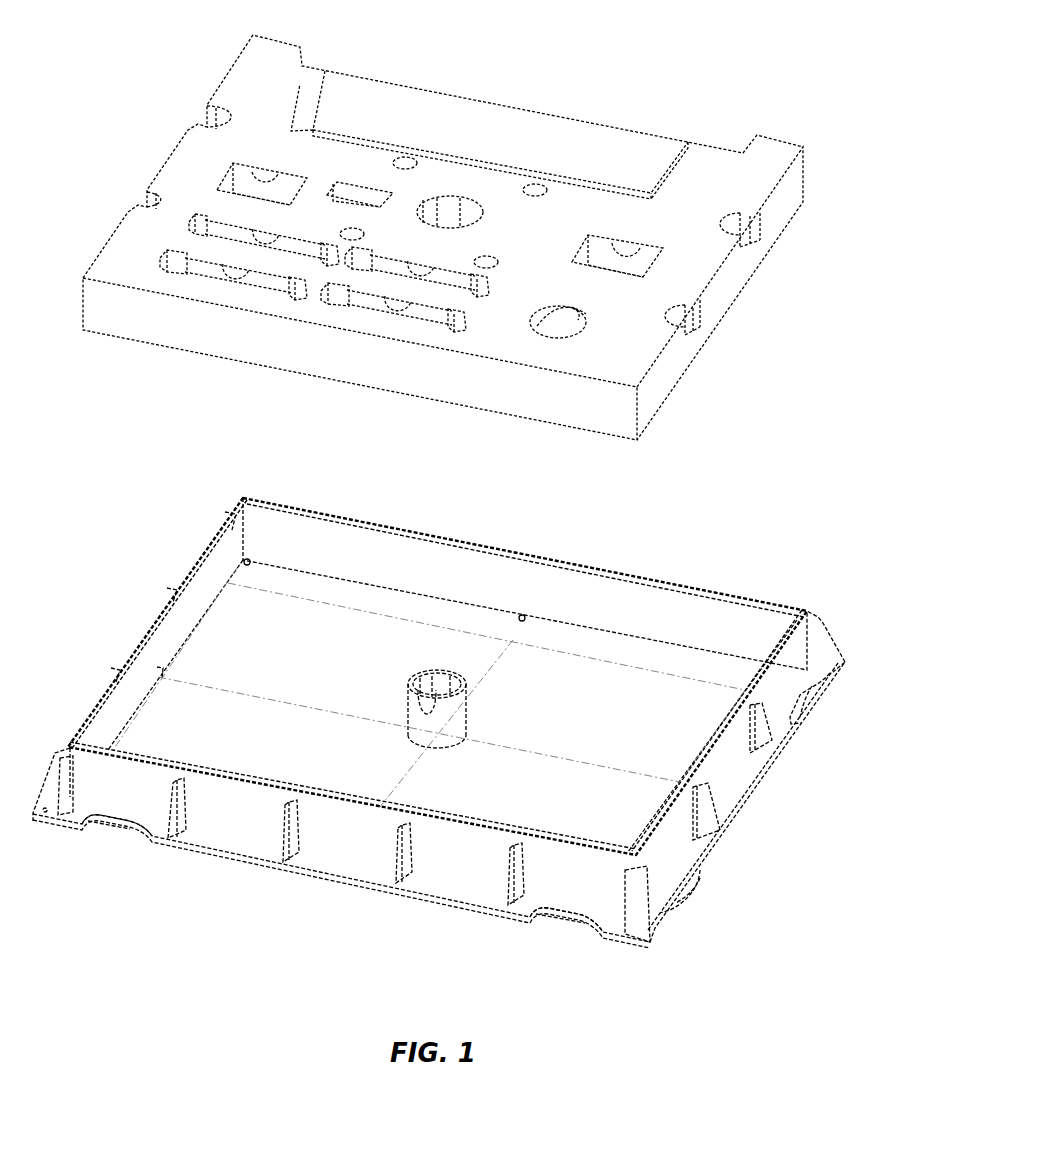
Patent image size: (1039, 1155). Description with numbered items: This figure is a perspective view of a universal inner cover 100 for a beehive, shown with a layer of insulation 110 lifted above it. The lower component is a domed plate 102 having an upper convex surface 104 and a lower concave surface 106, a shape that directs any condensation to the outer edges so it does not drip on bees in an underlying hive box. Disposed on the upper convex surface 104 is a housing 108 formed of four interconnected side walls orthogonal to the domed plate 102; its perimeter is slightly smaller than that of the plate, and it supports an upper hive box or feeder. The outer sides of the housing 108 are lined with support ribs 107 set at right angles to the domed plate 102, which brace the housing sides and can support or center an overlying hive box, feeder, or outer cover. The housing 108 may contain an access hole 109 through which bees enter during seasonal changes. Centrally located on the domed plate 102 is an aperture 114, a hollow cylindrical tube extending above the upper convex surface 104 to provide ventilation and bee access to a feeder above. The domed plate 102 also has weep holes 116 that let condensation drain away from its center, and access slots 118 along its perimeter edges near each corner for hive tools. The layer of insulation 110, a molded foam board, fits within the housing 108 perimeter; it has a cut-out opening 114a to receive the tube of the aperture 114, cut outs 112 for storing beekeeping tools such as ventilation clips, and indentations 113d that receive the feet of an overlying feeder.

The universal inner cover 100 is at (705, 538).
The domed plate 102 is at (762, 814).
The upper convex surface 104 is at (553, 717).
The lower concave surface 106 is at (735, 859).
The support ribs 107 is at (767, 732).
The housing 108 is at (285, 532).
The access hole 109 is at (160, 672).
The layer of insulation 110 is at (786, 87).
The cut outs 112 is at (334, 83).
The indentation 113d is at (353, 230).
The aperture 114 is at (424, 665).
The cut-out opening 114a is at (450, 207).
The weep holes 116 is at (245, 560).
The access slots 118 is at (815, 705).